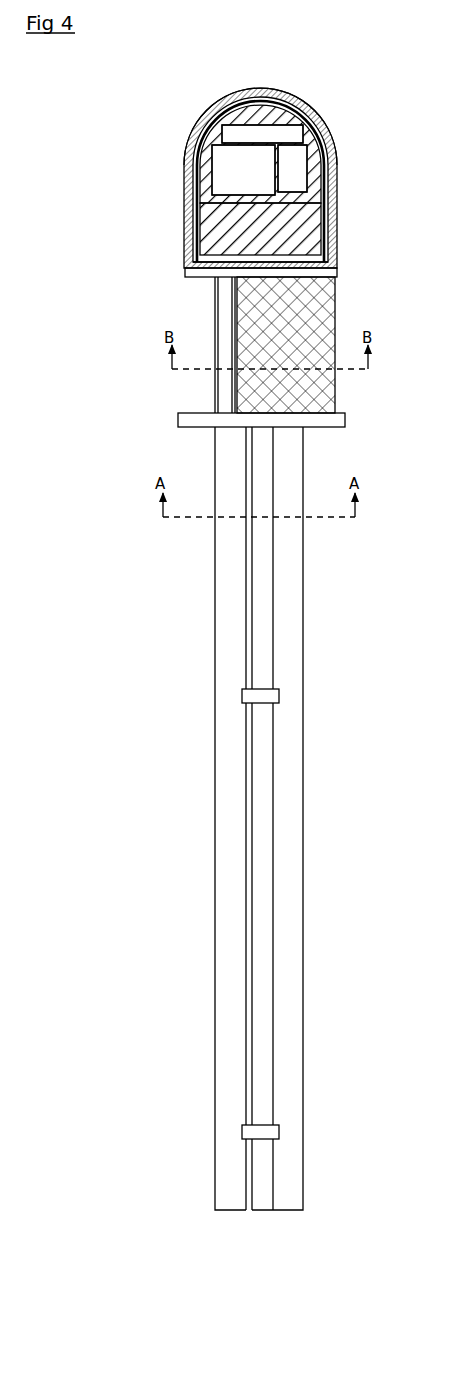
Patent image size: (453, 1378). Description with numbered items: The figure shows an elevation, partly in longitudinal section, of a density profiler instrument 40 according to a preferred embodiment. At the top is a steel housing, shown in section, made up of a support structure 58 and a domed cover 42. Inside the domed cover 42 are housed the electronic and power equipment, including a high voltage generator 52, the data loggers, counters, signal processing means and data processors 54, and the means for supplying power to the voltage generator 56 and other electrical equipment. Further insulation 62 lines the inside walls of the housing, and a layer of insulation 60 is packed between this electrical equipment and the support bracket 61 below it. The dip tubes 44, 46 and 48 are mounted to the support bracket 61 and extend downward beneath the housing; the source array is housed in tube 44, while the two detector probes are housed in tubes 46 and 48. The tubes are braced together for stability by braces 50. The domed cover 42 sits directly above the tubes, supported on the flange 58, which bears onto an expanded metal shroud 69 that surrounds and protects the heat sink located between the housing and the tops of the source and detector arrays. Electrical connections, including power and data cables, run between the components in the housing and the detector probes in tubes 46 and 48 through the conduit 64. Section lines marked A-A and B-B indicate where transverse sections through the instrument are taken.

The density profiler instrument 40 is at (187, 544).
The domed cover 42 is at (185, 173).
The dip tube 44 is at (224, 715).
The dip tube 46 is at (297, 748).
The dip tube 48 is at (262, 850).
The braces 50 is at (265, 694).
The high voltage generator 52 is at (227, 174).
The data processors 54 is at (335, 153).
The means for supplying power to the voltage generator 56 is at (290, 93).
The support structure 58 is at (337, 273).
The layer of insulation 60 is at (337, 222).
The support bracket 61 is at (178, 422).
The insulation 62 is at (325, 120).
The conduit 64 is at (224, 305).
The metal shroud 69 is at (335, 316).